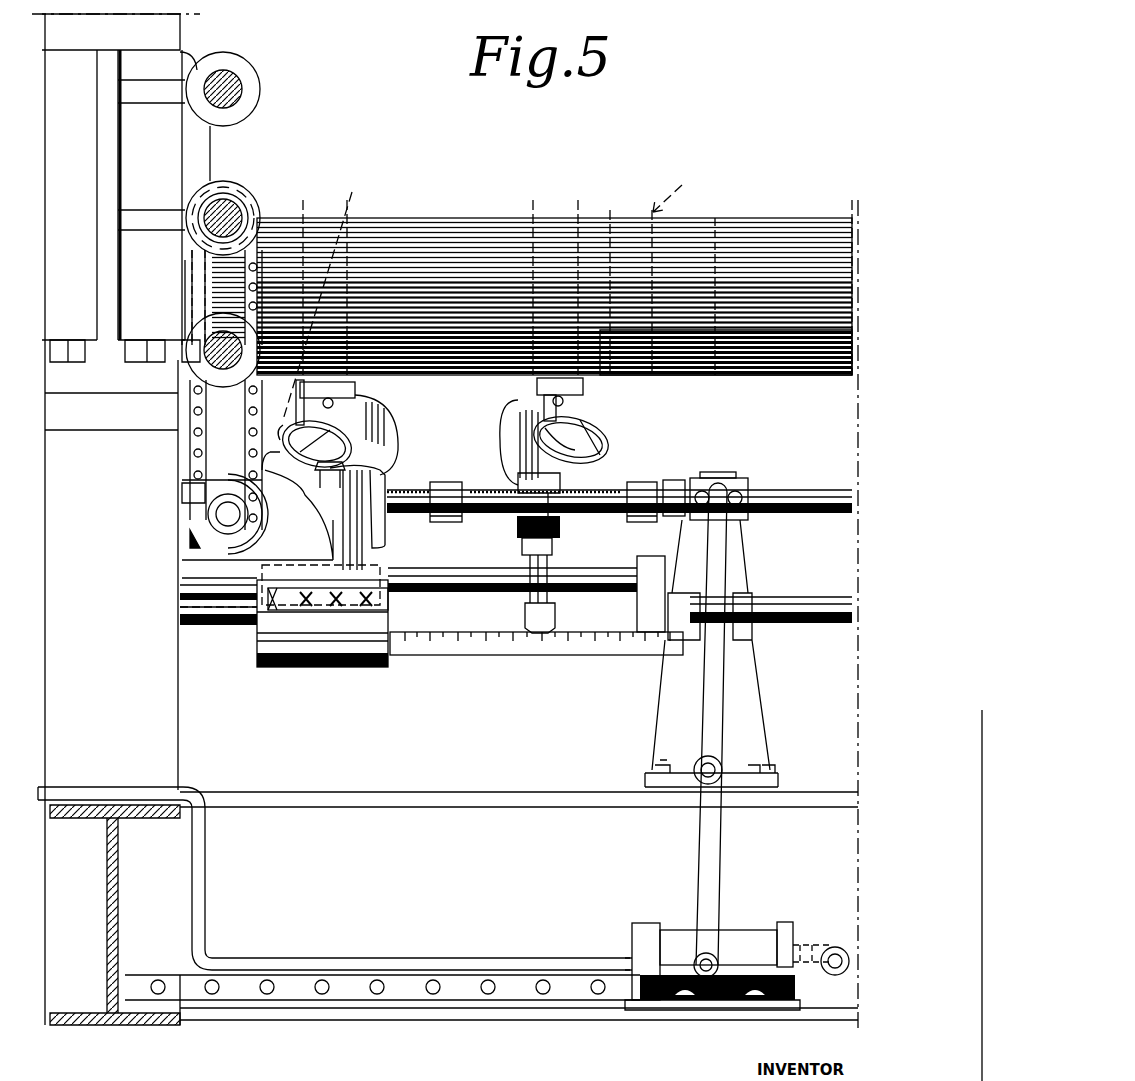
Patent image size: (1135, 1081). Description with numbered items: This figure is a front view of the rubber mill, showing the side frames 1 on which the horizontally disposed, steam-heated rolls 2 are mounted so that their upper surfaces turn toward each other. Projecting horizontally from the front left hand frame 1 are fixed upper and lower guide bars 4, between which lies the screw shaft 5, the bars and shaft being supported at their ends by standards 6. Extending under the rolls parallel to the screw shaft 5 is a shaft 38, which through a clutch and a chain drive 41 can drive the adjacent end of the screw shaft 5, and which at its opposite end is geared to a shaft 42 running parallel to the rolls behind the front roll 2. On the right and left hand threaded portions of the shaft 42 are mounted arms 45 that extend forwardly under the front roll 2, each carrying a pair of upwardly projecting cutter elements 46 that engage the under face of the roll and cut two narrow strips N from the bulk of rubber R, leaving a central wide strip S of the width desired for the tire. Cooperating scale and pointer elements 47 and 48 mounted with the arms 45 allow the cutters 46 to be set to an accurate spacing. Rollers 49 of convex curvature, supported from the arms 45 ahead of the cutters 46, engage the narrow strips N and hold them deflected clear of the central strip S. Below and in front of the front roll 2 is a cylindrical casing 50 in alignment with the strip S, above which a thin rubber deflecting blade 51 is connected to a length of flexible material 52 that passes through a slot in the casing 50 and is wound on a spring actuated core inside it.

The side frames 1 is at (140, 745).
The rolls 2 is at (752, 340).
The guide bars 4 is at (228, 78).
The screw shaft 5 is at (238, 210).
The standards 6 is at (188, 166).
The shaft 38 is at (228, 514).
The chain drive 41 is at (200, 420).
The shaft 42 is at (775, 486).
The arms 45 is at (330, 476).
The cutter elements 46 is at (370, 392).
The scale 47 is at (420, 652).
The pointer 48 is at (540, 633).
The rollers 49 is at (322, 435).
The cylindrical casing 50 is at (320, 670).
The rubber deflecting blade 51 is at (262, 615).
The length of flexible material 52 is at (388, 597).
The central wide strip S is at (435, 262).
The narrow strips N is at (567, 291).
The bulk of rubber R is at (697, 262).